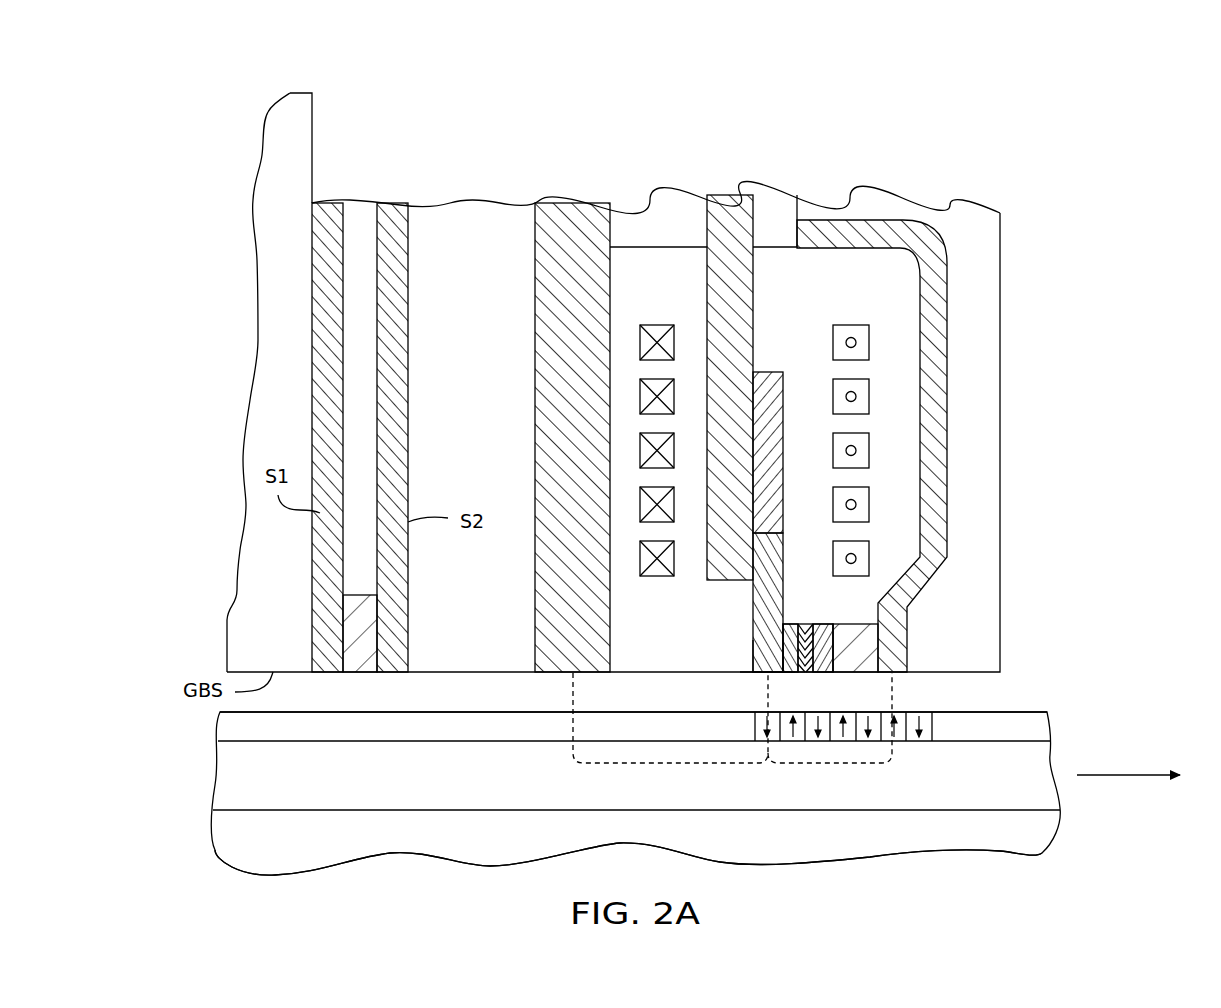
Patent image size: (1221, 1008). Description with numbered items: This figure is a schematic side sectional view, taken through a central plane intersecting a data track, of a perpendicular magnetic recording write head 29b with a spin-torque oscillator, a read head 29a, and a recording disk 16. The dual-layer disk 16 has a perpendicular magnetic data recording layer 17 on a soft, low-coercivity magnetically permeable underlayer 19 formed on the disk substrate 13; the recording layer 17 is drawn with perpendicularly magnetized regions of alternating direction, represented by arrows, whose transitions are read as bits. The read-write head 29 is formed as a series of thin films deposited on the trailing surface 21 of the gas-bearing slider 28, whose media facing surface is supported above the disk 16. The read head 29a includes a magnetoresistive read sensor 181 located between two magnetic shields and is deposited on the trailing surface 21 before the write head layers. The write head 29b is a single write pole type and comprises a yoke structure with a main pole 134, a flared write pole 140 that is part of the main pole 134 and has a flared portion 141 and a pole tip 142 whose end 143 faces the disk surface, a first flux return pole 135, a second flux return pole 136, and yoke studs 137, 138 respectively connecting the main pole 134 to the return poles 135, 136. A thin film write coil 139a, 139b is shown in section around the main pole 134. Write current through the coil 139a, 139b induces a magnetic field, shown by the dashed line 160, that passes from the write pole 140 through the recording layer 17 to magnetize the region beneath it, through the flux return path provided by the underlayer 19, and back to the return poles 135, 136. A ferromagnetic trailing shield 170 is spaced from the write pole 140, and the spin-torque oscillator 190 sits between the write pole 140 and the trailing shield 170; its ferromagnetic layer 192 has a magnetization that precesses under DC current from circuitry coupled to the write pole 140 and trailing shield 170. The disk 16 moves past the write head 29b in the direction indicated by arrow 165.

The disk substrate 13 is at (1047, 830).
The recording disk 16 is at (175, 835).
The perpendicular magnetic data recording layer 17 is at (1043, 728).
The soft underlayer 19 is at (1037, 758).
The trailing surface 21 is at (312, 123).
The slider 28 is at (262, 155).
The read-write head 29 is at (315, 88).
The read head 29a is at (410, 200).
The write head 29b is at (538, 168).
The main pole 134 is at (720, 280).
The first flux return pole 135 is at (543, 277).
The second flux return pole 136 is at (943, 487).
The yoke stud 137 is at (665, 220).
The yoke stud 138 is at (768, 210).
The write coil section 139a is at (637, 578).
The write coil section 139b is at (873, 578).
The write pole 140 is at (770, 387).
The flared portion 141 is at (767, 590).
The pole tip 142 is at (762, 666).
The end 143 is at (760, 675).
The magnetic field 160 is at (893, 703).
The arrow 165 is at (1140, 773).
The trailing shield 170 is at (867, 647).
The magnetoresistive read sensor 181 is at (360, 665).
The spin-torque oscillator 190 is at (783, 620).
The ferromagnetic layer 192 is at (805, 663).